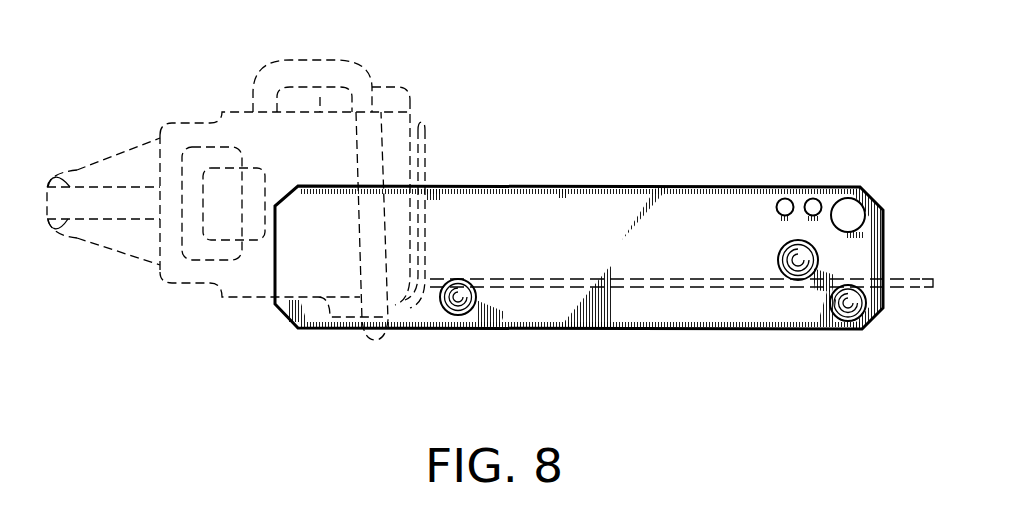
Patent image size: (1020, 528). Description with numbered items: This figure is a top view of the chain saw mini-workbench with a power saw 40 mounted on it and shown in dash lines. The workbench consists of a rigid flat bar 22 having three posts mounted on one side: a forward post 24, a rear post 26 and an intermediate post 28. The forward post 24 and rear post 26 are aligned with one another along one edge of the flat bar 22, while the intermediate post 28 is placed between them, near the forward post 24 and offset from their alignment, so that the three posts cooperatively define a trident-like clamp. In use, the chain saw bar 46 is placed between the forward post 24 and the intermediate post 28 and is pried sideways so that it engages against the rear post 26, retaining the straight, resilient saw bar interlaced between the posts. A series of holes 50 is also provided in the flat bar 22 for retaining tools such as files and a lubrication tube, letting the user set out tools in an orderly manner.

The power saw 40 is at (347, 147).
The rigid flat bar 22 is at (545, 208).
The chain saw bar 46 is at (648, 288).
The series of holes 50 is at (845, 197).
The rear post 26 is at (452, 315).
The intermediate post 28 is at (780, 268).
The forward post 24 is at (840, 318).